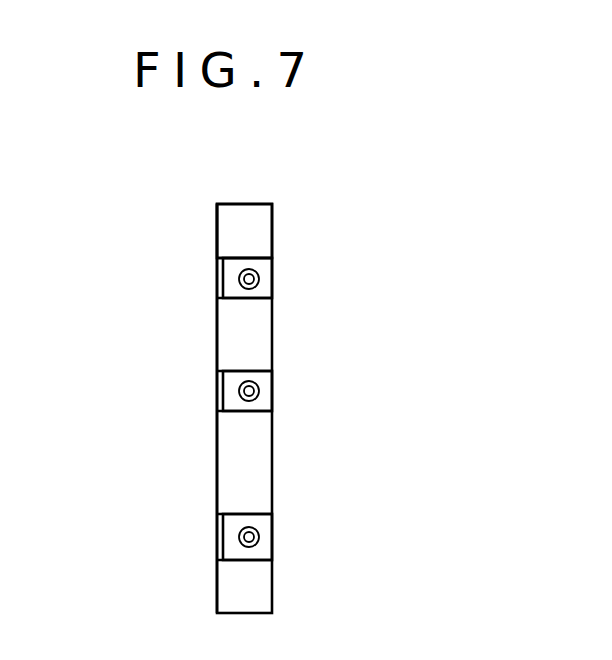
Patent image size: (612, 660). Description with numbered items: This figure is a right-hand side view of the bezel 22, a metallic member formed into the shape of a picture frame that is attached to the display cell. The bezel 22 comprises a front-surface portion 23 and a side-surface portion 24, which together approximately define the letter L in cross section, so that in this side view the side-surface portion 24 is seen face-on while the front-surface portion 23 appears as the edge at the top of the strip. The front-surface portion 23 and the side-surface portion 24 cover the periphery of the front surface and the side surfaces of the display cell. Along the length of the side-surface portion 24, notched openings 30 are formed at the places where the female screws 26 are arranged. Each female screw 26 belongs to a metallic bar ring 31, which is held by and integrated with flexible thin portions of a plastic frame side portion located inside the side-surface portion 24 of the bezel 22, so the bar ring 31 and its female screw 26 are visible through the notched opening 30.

The bezel 22 is at (252, 210).
The front-surface portion 23 is at (215, 228).
The side-surface portion 24 is at (255, 228).
The notched opening 30 is at (262, 263).
The female screw 26 is at (257, 280).
The metallic bar ring 31 is at (263, 291).